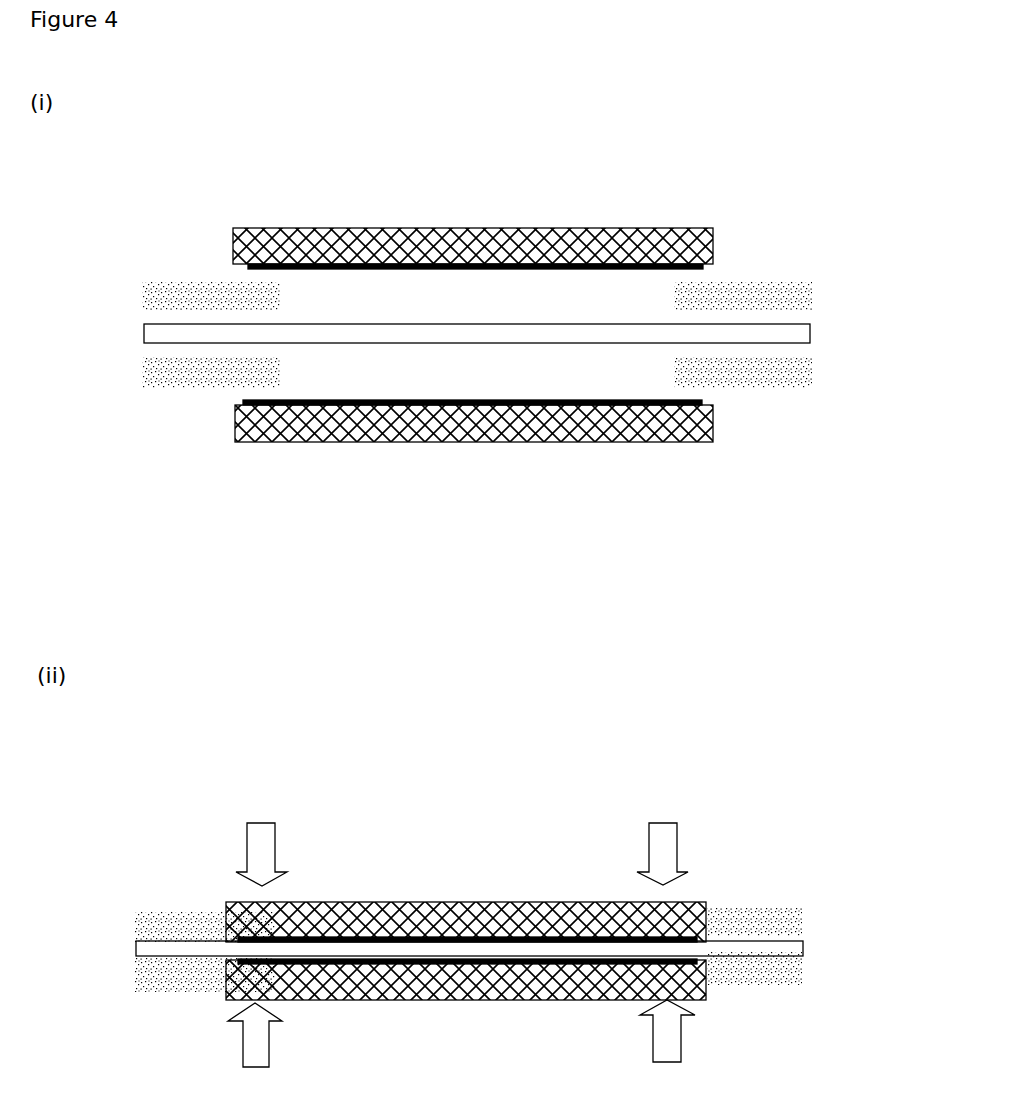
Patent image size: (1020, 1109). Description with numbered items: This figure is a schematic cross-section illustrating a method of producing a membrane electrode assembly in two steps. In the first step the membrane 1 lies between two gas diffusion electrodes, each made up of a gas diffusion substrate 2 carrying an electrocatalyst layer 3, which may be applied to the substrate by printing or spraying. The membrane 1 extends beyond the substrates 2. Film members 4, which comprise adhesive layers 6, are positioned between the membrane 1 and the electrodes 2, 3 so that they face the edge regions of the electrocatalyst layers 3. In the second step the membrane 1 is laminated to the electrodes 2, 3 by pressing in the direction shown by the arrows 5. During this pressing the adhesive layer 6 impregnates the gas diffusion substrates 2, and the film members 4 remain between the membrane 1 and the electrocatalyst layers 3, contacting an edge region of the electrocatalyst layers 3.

The membrane 1 is at (371, 338).
The gas diffusion substrate 2 is at (504, 240).
The electrocatalyst layer 3 is at (625, 268).
The film member 4 is at (133, 307).
The arrows 5 is at (466, 945).
The adhesive layer 6 is at (245, 290).